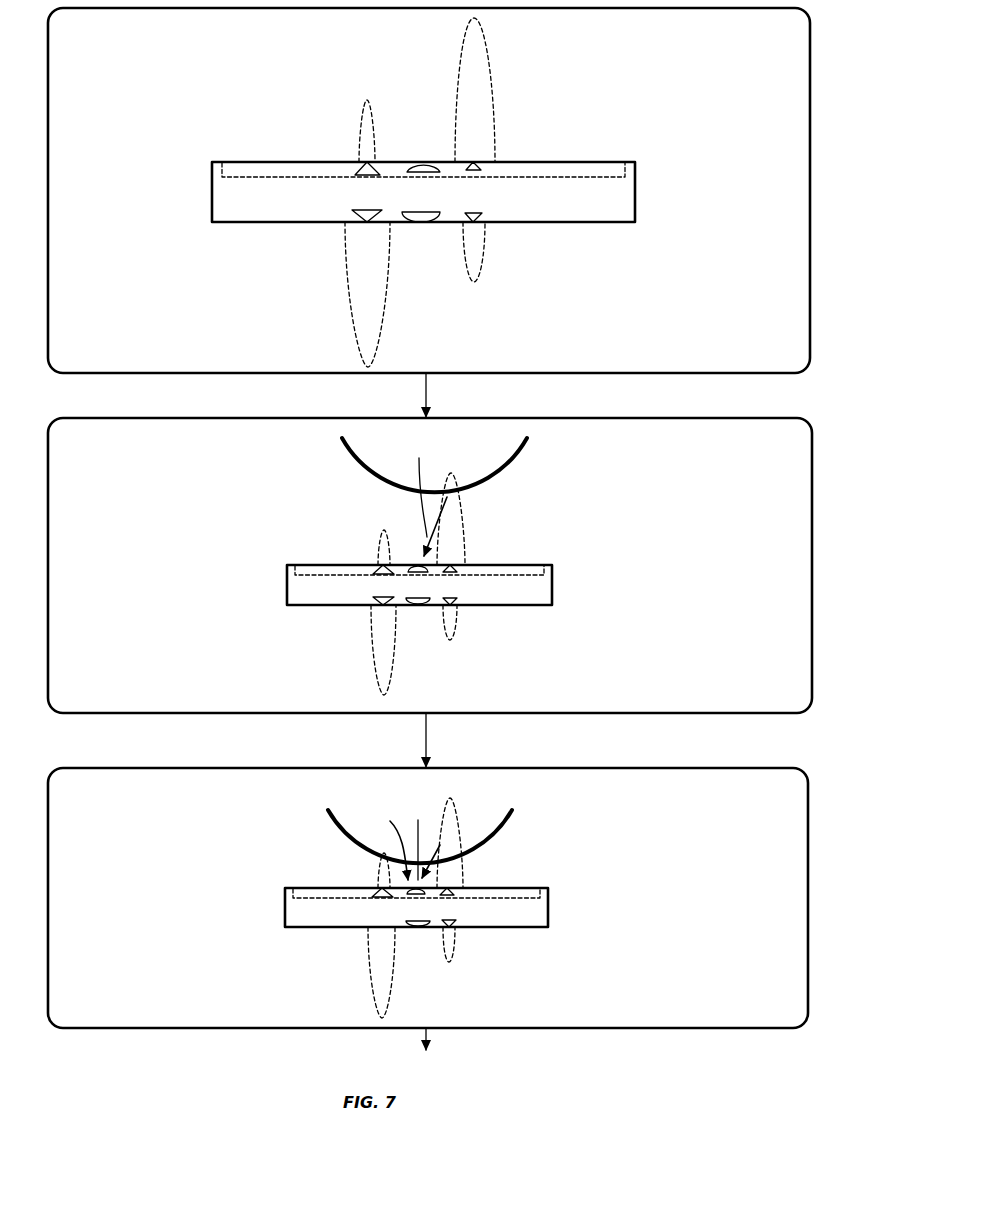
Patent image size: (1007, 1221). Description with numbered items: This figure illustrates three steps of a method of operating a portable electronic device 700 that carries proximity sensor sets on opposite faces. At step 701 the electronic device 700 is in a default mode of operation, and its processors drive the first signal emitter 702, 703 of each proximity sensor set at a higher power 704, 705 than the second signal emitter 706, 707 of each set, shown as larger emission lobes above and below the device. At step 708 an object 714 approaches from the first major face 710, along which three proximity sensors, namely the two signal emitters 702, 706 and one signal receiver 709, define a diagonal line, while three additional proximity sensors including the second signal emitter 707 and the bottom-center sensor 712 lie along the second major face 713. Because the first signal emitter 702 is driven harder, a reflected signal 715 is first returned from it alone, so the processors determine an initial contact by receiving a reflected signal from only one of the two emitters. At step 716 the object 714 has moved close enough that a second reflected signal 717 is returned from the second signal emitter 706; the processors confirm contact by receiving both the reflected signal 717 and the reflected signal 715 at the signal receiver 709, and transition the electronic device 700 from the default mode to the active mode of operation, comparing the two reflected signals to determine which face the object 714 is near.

The electronic device 700 is at (648, 190).
The step 701 is at (810, 151).
The first signal emitter 702 is at (474, 160).
The first signal emitter 703 is at (366, 223).
The higher power 704 is at (497, 92).
The higher power 705 is at (345, 279).
The second signal emitter 706 is at (366, 160).
The second signal emitter 707 is at (476, 223).
The step 708 is at (812, 612).
The signal receiver 709 is at (418, 553).
The first major face 710 is at (521, 563).
The bottom center lens 712 is at (417, 607).
The second major face 713 is at (536, 606).
The object 714 is at (303, 839).
The reflected signal 715 is at (419, 661).
The step 716 is at (808, 957).
The second reflected signal 717 is at (386, 841).